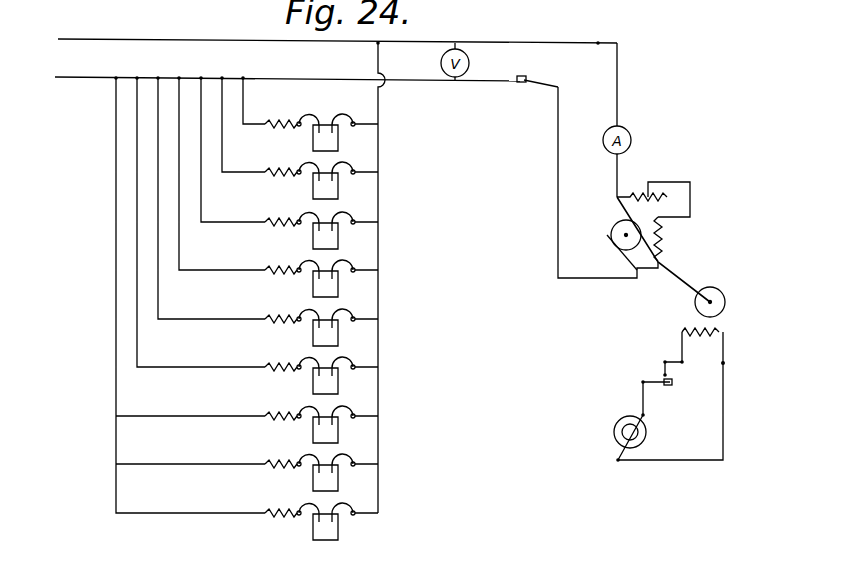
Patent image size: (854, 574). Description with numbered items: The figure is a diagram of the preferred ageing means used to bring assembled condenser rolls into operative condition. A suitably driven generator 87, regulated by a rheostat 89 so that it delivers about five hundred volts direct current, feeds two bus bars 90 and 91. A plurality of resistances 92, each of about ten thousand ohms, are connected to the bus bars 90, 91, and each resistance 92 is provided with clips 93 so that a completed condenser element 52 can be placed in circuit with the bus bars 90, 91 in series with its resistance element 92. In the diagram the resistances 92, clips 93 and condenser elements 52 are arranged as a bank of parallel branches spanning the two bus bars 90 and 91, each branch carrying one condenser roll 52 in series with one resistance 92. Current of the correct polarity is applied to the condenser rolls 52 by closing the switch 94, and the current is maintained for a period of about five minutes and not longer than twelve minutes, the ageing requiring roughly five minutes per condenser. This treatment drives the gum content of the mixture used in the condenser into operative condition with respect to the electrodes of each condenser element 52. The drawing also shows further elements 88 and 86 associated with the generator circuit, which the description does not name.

The bus bar 90 is at (337, 27).
The bus bar 91 is at (287, 66).
The resistance 92 is at (296, 127).
The clip 93 is at (357, 360).
The condenser element 52 is at (333, 140).
The switch 94 is at (532, 88).
The rheostat 89 is at (649, 196).
The resistance 88 is at (660, 238).
The generator 87 is at (614, 226).
The contact 86 is at (722, 291).